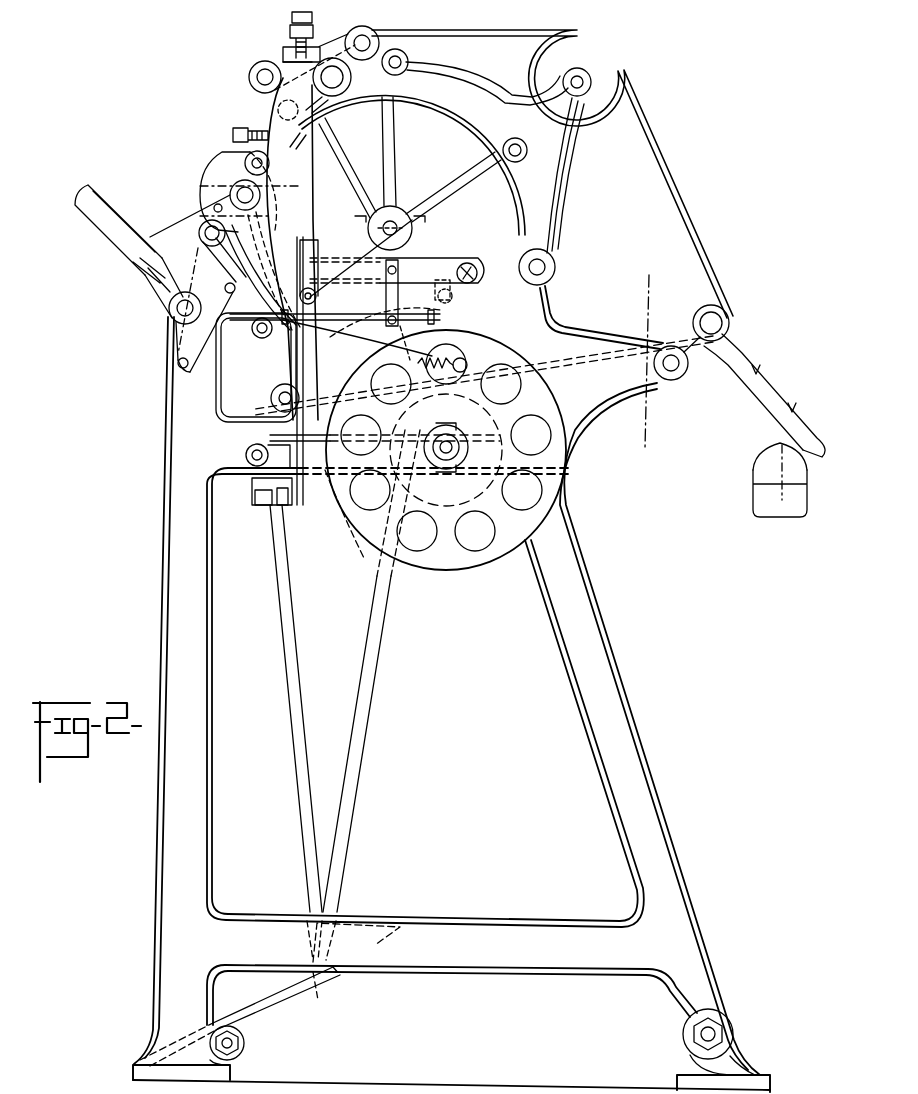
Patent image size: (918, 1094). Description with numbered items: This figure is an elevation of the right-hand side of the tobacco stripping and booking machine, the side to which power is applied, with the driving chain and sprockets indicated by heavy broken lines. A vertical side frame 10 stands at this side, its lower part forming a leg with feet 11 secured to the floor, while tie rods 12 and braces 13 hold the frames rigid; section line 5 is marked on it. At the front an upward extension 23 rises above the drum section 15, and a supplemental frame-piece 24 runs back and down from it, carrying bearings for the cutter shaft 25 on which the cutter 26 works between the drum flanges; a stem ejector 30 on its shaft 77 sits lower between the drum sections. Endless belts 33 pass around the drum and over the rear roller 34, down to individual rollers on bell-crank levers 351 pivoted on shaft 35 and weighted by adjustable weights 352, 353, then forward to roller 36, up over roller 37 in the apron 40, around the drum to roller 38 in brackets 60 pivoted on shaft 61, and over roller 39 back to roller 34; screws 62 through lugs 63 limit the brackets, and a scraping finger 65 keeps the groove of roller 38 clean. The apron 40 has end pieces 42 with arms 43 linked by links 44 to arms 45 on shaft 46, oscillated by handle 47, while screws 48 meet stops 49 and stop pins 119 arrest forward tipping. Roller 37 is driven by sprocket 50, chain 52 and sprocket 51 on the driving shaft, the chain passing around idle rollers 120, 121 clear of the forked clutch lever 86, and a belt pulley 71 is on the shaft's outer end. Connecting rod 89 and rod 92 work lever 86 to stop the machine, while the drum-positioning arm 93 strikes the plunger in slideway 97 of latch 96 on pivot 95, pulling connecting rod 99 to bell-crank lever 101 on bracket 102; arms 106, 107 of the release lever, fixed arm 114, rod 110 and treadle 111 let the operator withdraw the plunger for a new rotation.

The side frame 10 is at (451, 689).
The feet 11 is at (137, 1066).
The tie rod 12 is at (245, 1043).
The brace 13 is at (478, 30).
The drum section 15 is at (450, 112).
The extension 23 is at (292, 241).
The supplemental frame-piece 24 is at (495, 157).
The cutter shaft 25 is at (345, 76).
The cutter 26 is at (318, 112).
The stem ejector 30 is at (357, 351).
The belt 33 is at (265, 354).
The roller 34 is at (577, 70).
The shaft 35 is at (672, 347).
The roller 36 is at (280, 402).
The roller 37 is at (225, 184).
The roller 38 is at (278, 108).
The roller 39 is at (395, 50).
The apron 40 is at (213, 165).
The end piece 42 is at (200, 231).
The arm 43 is at (210, 253).
The link 44 is at (178, 357).
The arm 45 is at (180, 330).
The transverse shaft 46 is at (168, 308).
The handle 47 is at (105, 245).
The adjustable screw 48 is at (233, 135).
The stop 49 is at (275, 124).
The sprocket wheel 50 is at (195, 200).
The sprocket 51 is at (447, 515).
The chain 52 is at (258, 433).
The section line 5 is at (644, 363).
The bracket 60 is at (322, 47).
The shaft 61 is at (362, 30).
The adjustable screw 62 is at (290, 18).
The lug 63 is at (290, 39).
The scraping finger 65 is at (252, 75).
The belt pulley 71 is at (360, 542).
The shaft 77 is at (406, 358).
The lever 86 is at (306, 452).
The connecting rod 89 is at (278, 678).
The rod 92 is at (246, 447).
The arm 93 is at (325, 172).
The pivot 95 is at (470, 258).
The latch 96 is at (397, 270).
The tubular slideway 97 is at (356, 265).
The connecting rod 99 is at (165, 396).
The bell-crank lever 101 is at (287, 512).
The bracket 102 is at (260, 508).
The arm 106 is at (400, 300).
The arm 107 is at (335, 325).
The rod 110 is at (375, 676).
The treadle 111 is at (285, 998).
The fixed arm 114 is at (440, 296).
The stop pin 119 is at (228, 213).
The idle flanged roller 120 is at (248, 331).
The idle flanged roller 121 is at (256, 492).
The bell-crank lever 351 is at (540, 381).
The adjustable weight 352 is at (786, 505).
The adjustable weight 353 is at (760, 470).